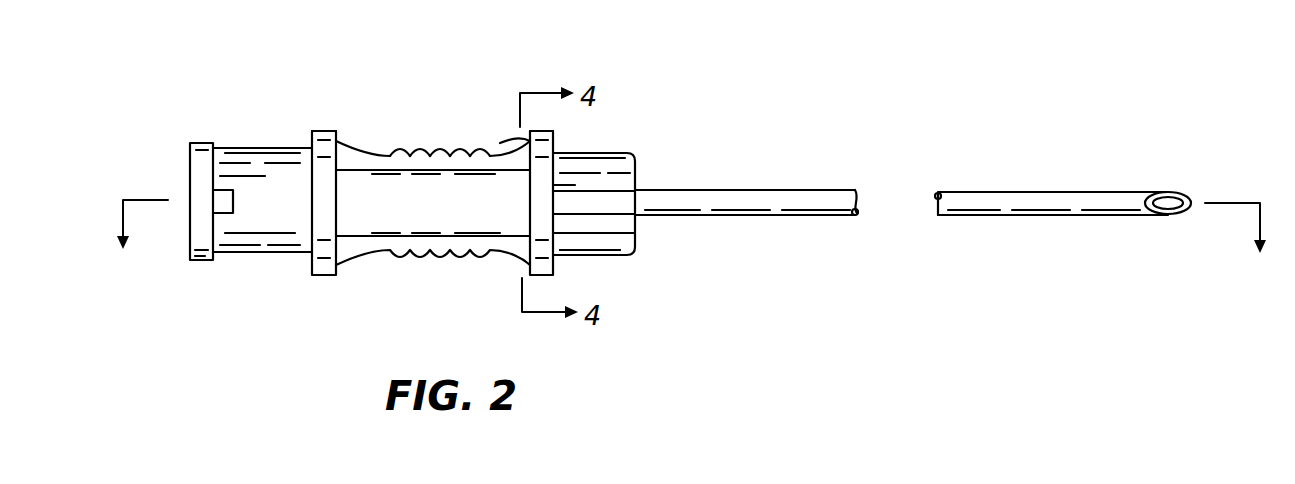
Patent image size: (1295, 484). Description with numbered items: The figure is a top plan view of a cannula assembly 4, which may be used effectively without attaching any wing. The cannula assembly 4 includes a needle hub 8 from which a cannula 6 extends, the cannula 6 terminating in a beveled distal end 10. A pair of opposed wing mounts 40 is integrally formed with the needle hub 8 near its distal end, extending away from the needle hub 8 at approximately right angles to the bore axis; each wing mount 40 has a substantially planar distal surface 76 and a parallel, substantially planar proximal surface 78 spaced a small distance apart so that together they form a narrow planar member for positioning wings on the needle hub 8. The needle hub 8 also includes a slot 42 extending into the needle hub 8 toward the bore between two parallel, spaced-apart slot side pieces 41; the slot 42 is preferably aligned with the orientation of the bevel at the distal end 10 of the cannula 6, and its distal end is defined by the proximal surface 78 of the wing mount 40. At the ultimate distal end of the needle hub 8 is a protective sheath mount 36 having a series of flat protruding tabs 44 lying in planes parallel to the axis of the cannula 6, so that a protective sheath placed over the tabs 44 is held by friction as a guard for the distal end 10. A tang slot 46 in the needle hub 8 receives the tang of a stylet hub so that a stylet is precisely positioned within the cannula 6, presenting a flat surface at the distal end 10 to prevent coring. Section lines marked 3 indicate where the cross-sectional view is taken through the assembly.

The section line 3- 3 is at (688, 246).
The cannula assembly 4 is at (824, 134).
The cannula 6 is at (1033, 215).
The needle hub 8 is at (596, 114).
The distal end of cannula 10 is at (1200, 178).
The protective sheath mount 36 is at (650, 246).
The wing mounts 40 is at (555, 142).
The slot side pieces 41 is at (397, 172).
The slot 42 is at (412, 213).
The tabs 44 is at (636, 160).
The tang slot 46 is at (190, 198).
The distal surface 76 is at (557, 192).
The proximal surface 78 is at (527, 142).